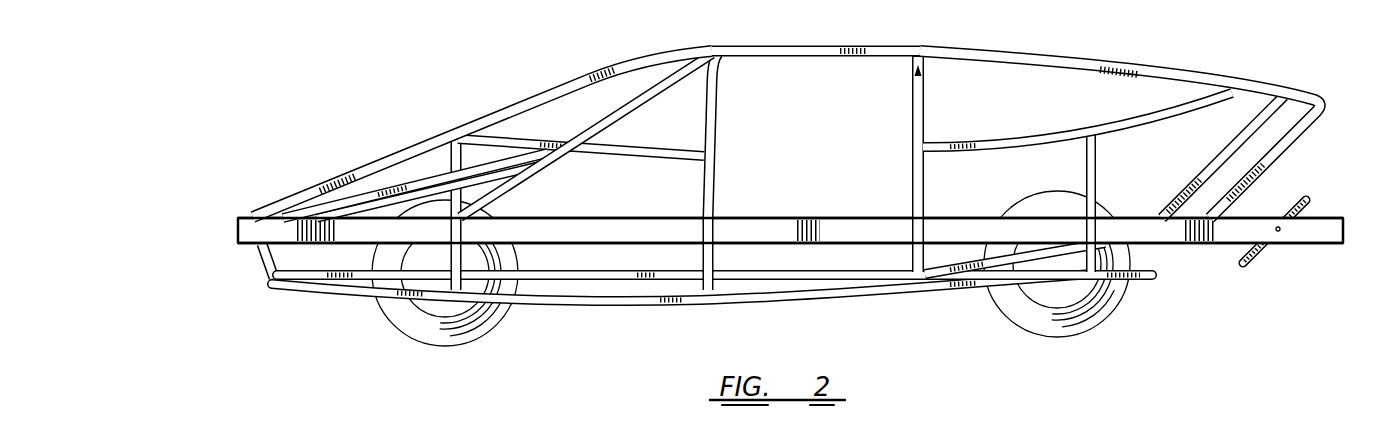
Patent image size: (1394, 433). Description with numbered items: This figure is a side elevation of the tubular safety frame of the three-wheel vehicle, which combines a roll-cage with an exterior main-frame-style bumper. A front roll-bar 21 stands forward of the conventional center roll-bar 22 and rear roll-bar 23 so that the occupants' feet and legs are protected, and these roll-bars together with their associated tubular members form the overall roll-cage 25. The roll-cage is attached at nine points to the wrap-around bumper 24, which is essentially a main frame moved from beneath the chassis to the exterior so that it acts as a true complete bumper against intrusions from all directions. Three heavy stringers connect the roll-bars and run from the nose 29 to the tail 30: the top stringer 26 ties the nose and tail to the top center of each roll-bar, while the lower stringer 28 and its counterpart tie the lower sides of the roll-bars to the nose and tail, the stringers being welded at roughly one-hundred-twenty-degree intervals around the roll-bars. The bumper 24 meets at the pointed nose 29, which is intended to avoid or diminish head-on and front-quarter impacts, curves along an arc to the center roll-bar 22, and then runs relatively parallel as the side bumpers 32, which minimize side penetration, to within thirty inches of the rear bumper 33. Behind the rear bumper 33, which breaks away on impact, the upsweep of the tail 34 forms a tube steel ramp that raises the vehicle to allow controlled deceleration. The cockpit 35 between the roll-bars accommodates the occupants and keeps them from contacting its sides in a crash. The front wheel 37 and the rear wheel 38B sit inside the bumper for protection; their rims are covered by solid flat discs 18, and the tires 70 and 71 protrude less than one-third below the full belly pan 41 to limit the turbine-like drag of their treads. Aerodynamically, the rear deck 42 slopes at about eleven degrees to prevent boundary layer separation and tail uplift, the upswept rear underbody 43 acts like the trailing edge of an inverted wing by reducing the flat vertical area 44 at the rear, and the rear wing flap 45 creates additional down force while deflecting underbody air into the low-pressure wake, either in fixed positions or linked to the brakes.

The solid flat disc 18 is at (425, 307).
The front roll-bar 21 is at (452, 162).
The center roll-bar 22 is at (720, 118).
The rear roll-bar 23 is at (928, 52).
The wrap-around bumper 24 is at (643, 232).
The roll-cage 25 is at (725, 44).
The top stringer 26 is at (862, 47).
The stringer 28 is at (727, 270).
The nose 29 is at (238, 228).
The tail 30 is at (1323, 100).
The side bumper 32 is at (770, 230).
The rear bumper 33 is at (1343, 228).
The upsweep of the tail 34 is at (1303, 122).
The cockpit 35 is at (776, 83).
The front wheel 37 is at (433, 310).
The rear wheel 38B is at (1083, 287).
The belly pan 41 is at (906, 301).
The rear deck 42 is at (1084, 62).
The rear underbody 43 is at (1140, 246).
The flat vertical area 44 is at (1268, 197).
The rear wing flap 45 is at (1253, 252).
The tire 70 is at (502, 318).
The tire 71 is at (1063, 331).